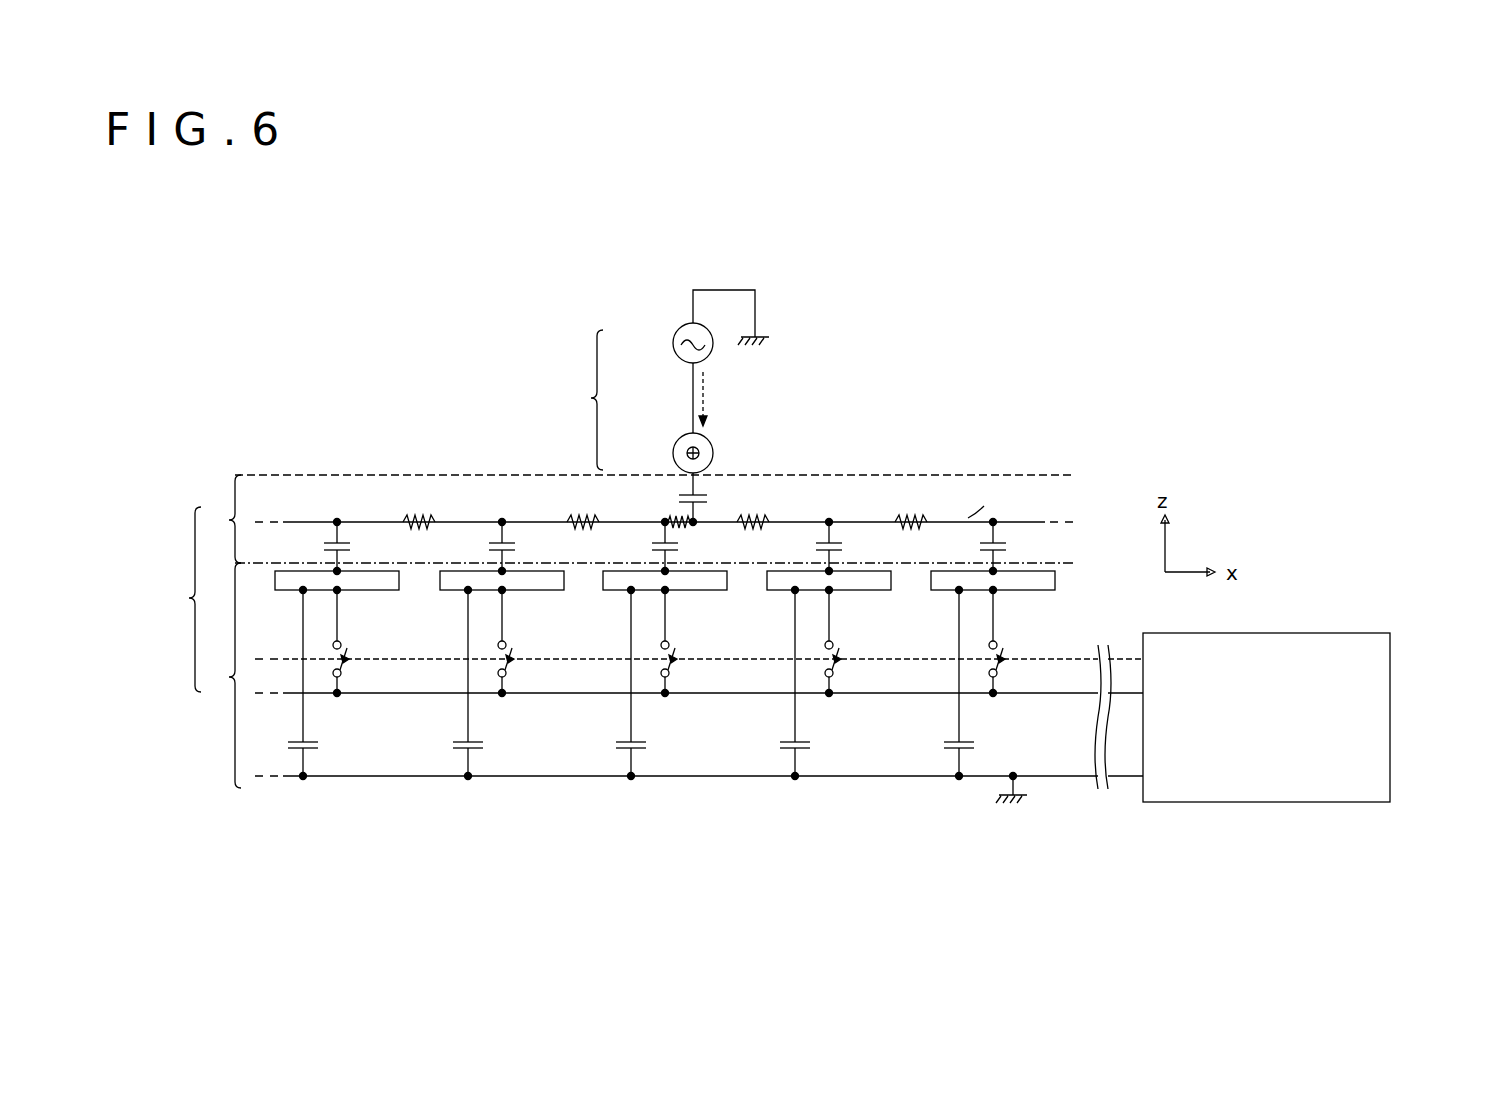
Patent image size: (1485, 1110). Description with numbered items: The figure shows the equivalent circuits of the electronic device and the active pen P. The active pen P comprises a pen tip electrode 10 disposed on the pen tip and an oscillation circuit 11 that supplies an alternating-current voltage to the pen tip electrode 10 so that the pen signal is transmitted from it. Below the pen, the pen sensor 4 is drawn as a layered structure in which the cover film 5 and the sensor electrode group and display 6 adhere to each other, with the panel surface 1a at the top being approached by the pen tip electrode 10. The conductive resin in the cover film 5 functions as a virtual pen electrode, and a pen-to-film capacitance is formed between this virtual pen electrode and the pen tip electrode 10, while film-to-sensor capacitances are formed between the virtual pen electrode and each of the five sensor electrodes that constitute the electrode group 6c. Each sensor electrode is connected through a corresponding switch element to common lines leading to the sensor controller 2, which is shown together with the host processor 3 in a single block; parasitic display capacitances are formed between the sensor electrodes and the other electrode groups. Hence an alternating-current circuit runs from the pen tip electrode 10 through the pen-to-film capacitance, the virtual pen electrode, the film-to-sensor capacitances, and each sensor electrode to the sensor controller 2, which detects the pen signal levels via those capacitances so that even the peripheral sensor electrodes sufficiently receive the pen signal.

The panel surface 1a is at (1005, 474).
The pen sensor 4 is at (653, 639).
The cover film 5 is at (640, 519).
The sensor electrode group and display 6 is at (675, 661).
The electrode group 6c is at (1056, 582).
The pen tip electrode 10 is at (672, 453).
The oscillation circuit 11 is at (672, 343).
The active pen P is at (667, 408).
The sensor controller 2 is at (1301, 717).
The host processor 3 is at (1390, 710).